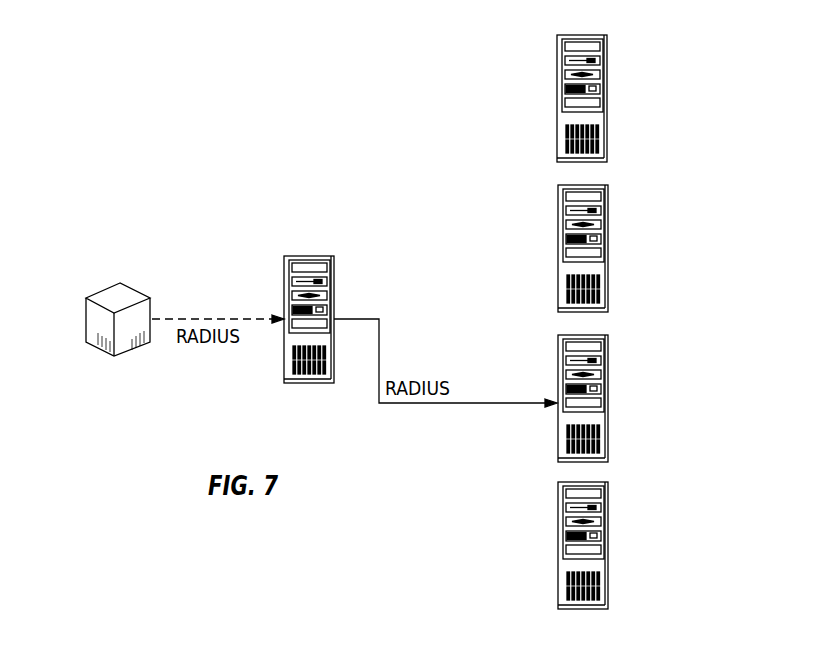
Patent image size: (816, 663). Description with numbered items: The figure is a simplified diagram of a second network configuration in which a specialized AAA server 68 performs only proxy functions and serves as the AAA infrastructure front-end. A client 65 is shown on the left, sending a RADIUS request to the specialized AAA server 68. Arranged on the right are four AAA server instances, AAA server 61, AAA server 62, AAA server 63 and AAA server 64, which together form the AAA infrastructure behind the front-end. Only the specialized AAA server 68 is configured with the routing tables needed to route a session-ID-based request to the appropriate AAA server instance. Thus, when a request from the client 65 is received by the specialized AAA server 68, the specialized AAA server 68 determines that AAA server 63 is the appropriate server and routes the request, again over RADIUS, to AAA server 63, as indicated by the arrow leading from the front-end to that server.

The client 65 is at (86, 320).
The specialized AAA server 68 is at (285, 278).
The AAA server 61 is at (556, 95).
The AAA server 62 is at (558, 247).
The AAA server 63 is at (558, 373).
The AAA server 64 is at (558, 546).